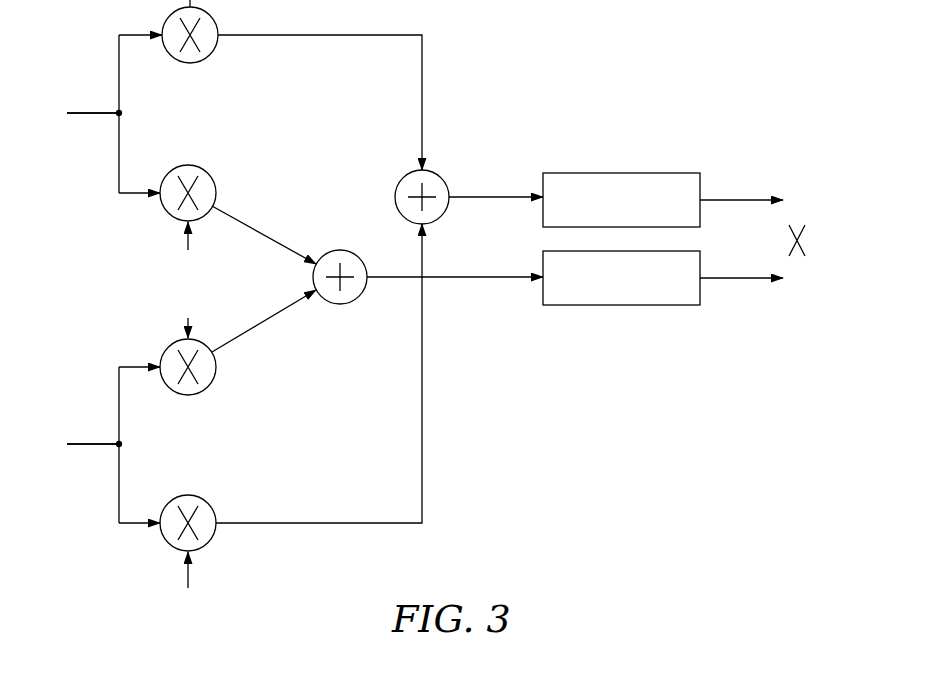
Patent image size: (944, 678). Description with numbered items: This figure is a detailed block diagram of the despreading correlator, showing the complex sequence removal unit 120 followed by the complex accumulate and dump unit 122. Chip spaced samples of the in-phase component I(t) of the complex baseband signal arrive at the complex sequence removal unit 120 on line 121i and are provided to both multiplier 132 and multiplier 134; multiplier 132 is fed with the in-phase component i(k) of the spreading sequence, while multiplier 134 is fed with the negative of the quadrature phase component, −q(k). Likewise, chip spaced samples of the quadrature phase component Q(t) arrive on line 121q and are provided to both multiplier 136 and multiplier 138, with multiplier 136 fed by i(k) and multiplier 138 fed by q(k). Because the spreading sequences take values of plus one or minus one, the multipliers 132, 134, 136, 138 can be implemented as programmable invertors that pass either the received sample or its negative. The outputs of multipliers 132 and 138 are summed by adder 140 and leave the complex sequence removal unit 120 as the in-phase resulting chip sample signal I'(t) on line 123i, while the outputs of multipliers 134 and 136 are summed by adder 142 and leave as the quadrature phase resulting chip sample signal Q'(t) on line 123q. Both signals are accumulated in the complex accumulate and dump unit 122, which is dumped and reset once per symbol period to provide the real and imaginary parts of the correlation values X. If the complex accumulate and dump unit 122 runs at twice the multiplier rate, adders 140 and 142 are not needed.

The complex sequence removal unit 120 is at (143, 262).
The line 121i is at (102, 115).
The line 121q is at (102, 446).
The complex accumulate and dump unit 122 is at (630, 143).
The line 123i is at (505, 197).
The line 123q is at (448, 280).
The multiplier 132 is at (210, 58).
The multiplier 134 is at (211, 182).
The multiplier 136 is at (207, 390).
The multiplier 138 is at (207, 545).
The adder 140 is at (405, 175).
The adder 142 is at (337, 304).